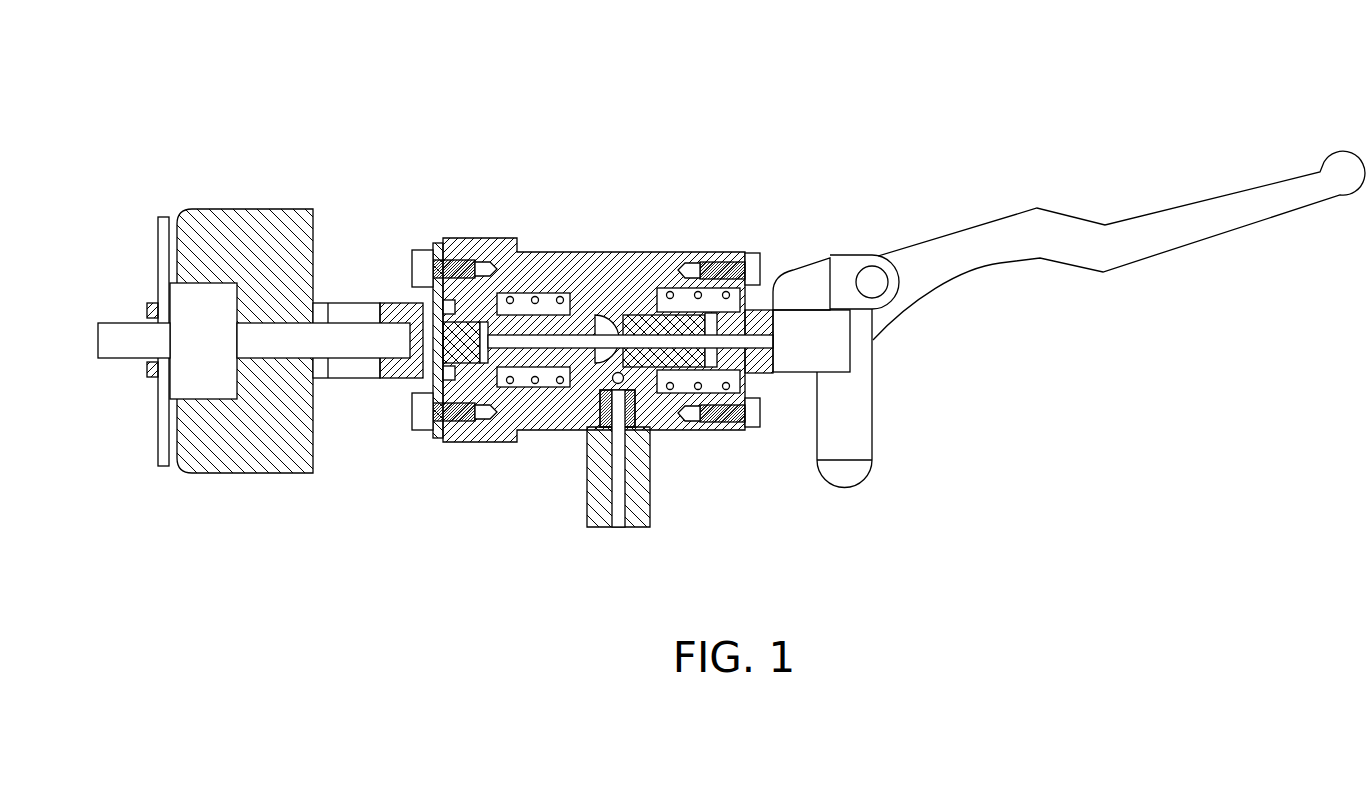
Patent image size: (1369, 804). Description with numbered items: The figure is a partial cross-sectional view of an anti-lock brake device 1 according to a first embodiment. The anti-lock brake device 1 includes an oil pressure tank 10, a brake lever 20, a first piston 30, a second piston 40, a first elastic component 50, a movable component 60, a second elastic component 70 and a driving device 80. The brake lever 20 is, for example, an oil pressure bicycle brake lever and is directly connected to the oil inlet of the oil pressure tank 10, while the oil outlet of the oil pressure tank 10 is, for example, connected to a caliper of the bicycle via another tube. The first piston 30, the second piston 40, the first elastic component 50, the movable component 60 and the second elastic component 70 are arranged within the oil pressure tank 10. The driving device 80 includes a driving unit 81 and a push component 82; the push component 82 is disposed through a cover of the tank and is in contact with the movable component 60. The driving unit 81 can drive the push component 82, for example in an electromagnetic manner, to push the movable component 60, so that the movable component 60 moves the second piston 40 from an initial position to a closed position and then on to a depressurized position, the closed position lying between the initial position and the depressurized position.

The anti-lock brake device 1 is at (209, 70).
The oil pressure tank 10 is at (608, 258).
The brake lever 20 is at (988, 207).
The first piston 30 is at (668, 395).
The second piston 40 is at (528, 357).
The first elastic component 50 is at (693, 297).
The movable component 60 is at (468, 312).
The second elastic component 70 is at (525, 310).
The driving device 80 is at (260, 294).
The driving unit 81 is at (281, 235).
The push component 82 is at (397, 312).